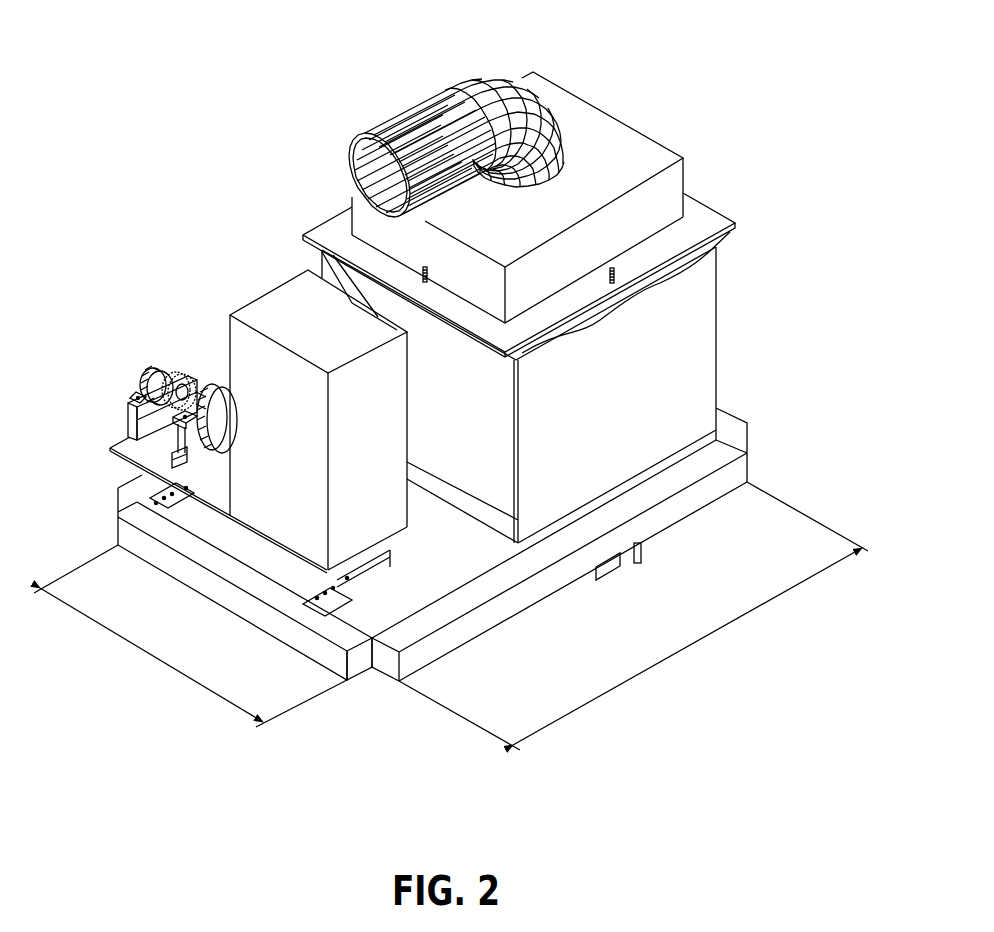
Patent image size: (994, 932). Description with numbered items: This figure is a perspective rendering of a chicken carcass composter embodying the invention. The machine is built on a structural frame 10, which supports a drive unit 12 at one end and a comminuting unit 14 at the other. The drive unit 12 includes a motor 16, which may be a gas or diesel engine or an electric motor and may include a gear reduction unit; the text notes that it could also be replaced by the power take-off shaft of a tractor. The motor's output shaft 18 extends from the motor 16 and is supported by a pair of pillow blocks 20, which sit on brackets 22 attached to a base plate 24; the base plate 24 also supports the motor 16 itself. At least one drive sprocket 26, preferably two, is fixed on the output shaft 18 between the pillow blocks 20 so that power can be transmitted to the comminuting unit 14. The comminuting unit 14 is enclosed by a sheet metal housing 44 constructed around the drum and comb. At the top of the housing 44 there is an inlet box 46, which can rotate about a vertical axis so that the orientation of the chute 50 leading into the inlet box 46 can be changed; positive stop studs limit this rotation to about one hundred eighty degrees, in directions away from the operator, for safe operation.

The structural frame 10 is at (472, 625).
The drive unit 12 is at (152, 243).
The comminuting unit 14 is at (632, 93).
The motor 16 is at (318, 420).
The output shaft 18 is at (141, 363).
The pillow blocks 20 is at (130, 392).
The brackets 22 is at (128, 416).
The base plate 24 is at (138, 453).
The drive sprocket 26 is at (188, 372).
The sheet metal housing 44 is at (722, 313).
The inlet box 46 is at (577, 107).
The chute 50 is at (415, 97).